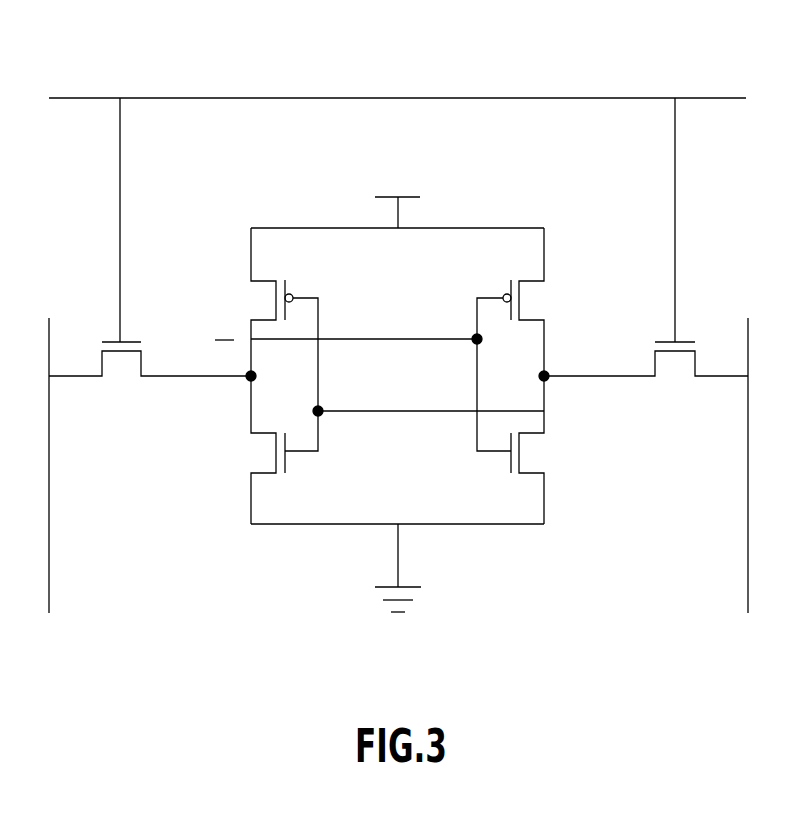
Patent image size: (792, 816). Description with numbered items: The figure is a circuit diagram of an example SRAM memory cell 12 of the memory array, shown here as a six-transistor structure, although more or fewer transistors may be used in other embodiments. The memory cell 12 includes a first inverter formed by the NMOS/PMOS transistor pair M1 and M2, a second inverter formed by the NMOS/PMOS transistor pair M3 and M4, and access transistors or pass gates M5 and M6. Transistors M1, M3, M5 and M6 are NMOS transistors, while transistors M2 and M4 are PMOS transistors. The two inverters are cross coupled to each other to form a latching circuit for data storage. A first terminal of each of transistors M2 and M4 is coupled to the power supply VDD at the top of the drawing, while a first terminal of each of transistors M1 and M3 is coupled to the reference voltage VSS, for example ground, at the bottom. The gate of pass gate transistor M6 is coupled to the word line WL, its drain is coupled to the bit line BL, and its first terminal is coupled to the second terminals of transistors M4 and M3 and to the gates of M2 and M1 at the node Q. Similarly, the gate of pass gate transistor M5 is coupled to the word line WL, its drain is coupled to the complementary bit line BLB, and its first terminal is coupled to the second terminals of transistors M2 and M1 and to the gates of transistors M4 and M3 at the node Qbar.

The memory cell 12 is at (396, 337).
The word line WL is at (88, 97).
The bit line BL is at (749, 487).
The complementary bit line BLB is at (50, 487).
The power supply VDD is at (397, 195).
The reference voltage VSS is at (397, 588).
The NMOS transistor M1 is at (273, 450).
The PMOS transistor M2 is at (274, 319).
The NMOS transistor M3 is at (521, 431).
The PMOS transistor M4 is at (521, 302).
The pass gate transistor M5 is at (150, 253).
The pass gate transistor M6 is at (646, 253).